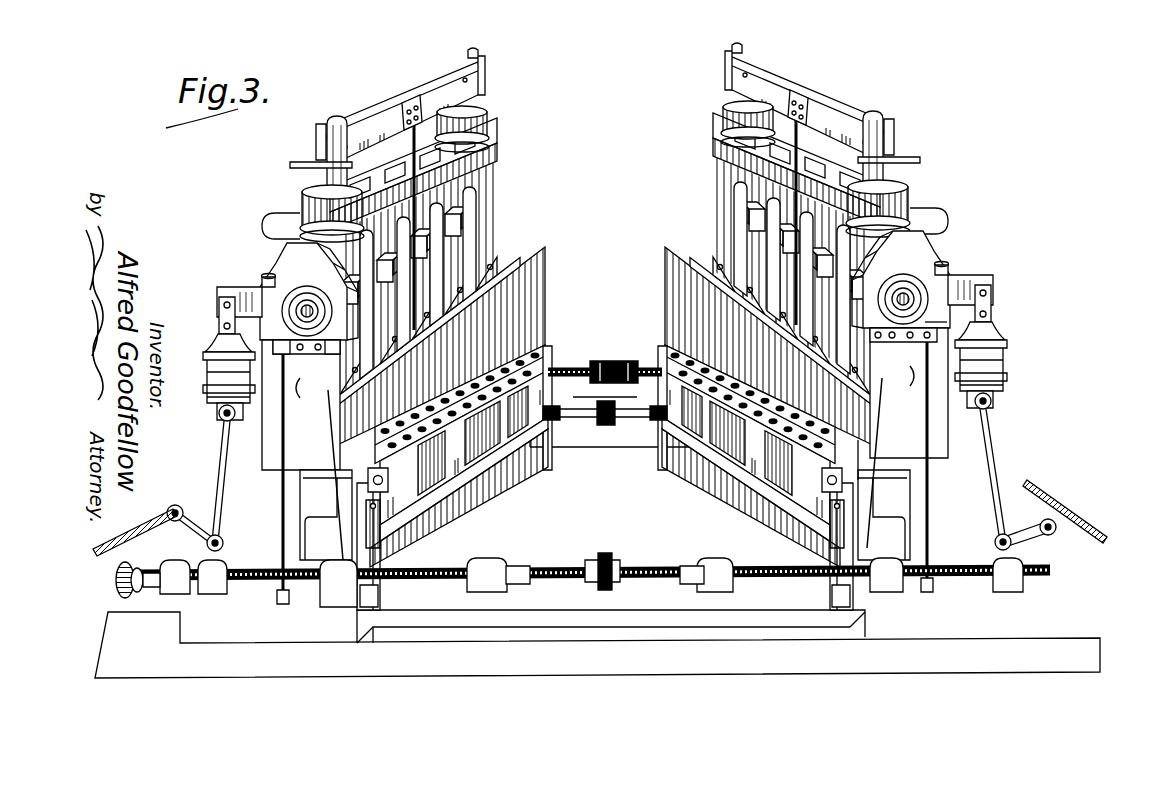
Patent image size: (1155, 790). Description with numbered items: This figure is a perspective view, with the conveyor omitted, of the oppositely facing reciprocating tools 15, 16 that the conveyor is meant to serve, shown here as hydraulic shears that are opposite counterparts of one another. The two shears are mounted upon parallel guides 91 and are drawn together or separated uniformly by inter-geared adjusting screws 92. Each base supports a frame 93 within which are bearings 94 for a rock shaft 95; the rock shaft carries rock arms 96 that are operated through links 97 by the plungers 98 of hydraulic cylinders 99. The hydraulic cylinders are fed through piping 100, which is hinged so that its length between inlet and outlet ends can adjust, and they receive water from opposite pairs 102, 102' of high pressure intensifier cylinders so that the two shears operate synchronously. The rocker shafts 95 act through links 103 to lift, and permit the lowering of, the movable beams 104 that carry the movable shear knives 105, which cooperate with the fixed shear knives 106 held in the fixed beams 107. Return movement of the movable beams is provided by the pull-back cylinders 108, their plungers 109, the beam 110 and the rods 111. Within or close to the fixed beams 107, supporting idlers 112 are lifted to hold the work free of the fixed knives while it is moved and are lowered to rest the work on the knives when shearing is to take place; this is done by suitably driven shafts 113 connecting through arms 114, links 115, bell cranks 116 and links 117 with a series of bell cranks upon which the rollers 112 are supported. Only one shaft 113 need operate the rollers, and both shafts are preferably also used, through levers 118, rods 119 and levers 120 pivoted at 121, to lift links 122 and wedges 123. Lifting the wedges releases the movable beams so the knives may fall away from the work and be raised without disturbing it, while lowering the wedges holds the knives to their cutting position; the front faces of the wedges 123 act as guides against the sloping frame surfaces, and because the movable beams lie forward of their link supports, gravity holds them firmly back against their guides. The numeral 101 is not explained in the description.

The reciprocating tool 15 is at (287, 251).
The reciprocating tool 16 is at (930, 249).
The parallel guides 91 is at (613, 418).
The inter-geared adjusting screws 92 is at (575, 563).
The frame 93 is at (937, 312).
The bearing 94 is at (307, 290).
The rock shaft 95 is at (303, 312).
The rock arm 96 is at (260, 293).
The link 97 is at (230, 311).
The plunger 98 is at (222, 348).
The hydraulic cylinder 99 is at (212, 386).
The piping 100 is at (215, 465).
The leg edge 101 is at (855, 446).
The high pressure intensifier cylinder 102 is at (135, 513).
The high pressure intensifier cylinder 102' is at (1074, 511).
The link 103 is at (470, 256).
The movable beam 104 is at (485, 293).
The movable shear knife 105 is at (477, 318).
The fixed shear knife 106 is at (518, 352).
The fixed beam 107 is at (534, 360).
The pull-back cylinder 108 is at (300, 209).
The plunger 109 is at (303, 181).
The beam 110 is at (385, 112).
The rod 111 is at (417, 166).
The supporting idler 112 is at (482, 350).
The shaft 113 is at (508, 563).
The arm 114 is at (398, 588).
The link 115 is at (435, 537).
The bell crank 116 is at (460, 517).
The link 117 is at (373, 486).
The lever 118 is at (310, 565).
The rod 119 is at (290, 508).
The lever 120 is at (284, 378).
The pivot 121 is at (276, 332).
The link 122 is at (338, 336).
The wedge 123 is at (585, 469).